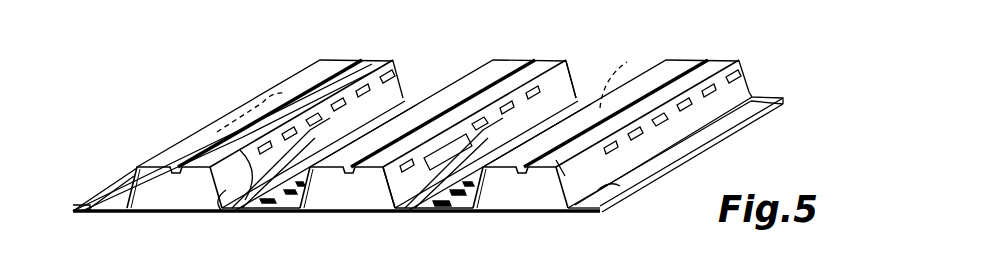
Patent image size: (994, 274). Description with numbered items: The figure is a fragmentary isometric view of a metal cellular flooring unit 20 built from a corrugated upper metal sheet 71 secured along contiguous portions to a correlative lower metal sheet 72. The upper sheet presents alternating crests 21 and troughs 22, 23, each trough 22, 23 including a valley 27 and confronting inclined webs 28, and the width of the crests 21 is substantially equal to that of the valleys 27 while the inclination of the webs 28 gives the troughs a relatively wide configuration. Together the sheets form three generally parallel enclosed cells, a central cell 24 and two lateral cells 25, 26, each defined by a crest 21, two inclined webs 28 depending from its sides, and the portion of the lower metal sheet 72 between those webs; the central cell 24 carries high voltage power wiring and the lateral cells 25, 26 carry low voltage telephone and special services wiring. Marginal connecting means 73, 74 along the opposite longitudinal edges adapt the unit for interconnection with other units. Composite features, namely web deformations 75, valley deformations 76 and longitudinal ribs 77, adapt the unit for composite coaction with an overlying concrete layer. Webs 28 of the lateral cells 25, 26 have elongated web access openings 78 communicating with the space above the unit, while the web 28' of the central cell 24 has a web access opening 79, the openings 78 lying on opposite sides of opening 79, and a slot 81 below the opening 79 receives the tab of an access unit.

The metal cellular flooring unit 20 is at (722, 32).
The crest 21 is at (357, 40).
The trough 22 is at (594, 76).
The trough 23 is at (432, 66).
The central cell 24 is at (370, 191).
The lateral cell 25 is at (543, 194).
The lateral cell 26 is at (195, 190).
The valley 27 is at (258, 208).
The inclined web 28 is at (395, 132).
The web of the central cell 28' is at (455, 116).
The corrugated upper metal sheet 71 is at (743, 62).
The lower metal sheet 72 is at (558, 214).
The marginal connecting means 73 is at (650, 172).
The marginal connecting means 74 is at (77, 210).
The web deformation 75 is at (553, 62).
The valley deformation 76 is at (447, 210).
The longitudinal rib 77 is at (413, 213).
The web access opening 78 is at (262, 95).
The web access opening 79 is at (447, 147).
The slot 81 is at (423, 213).